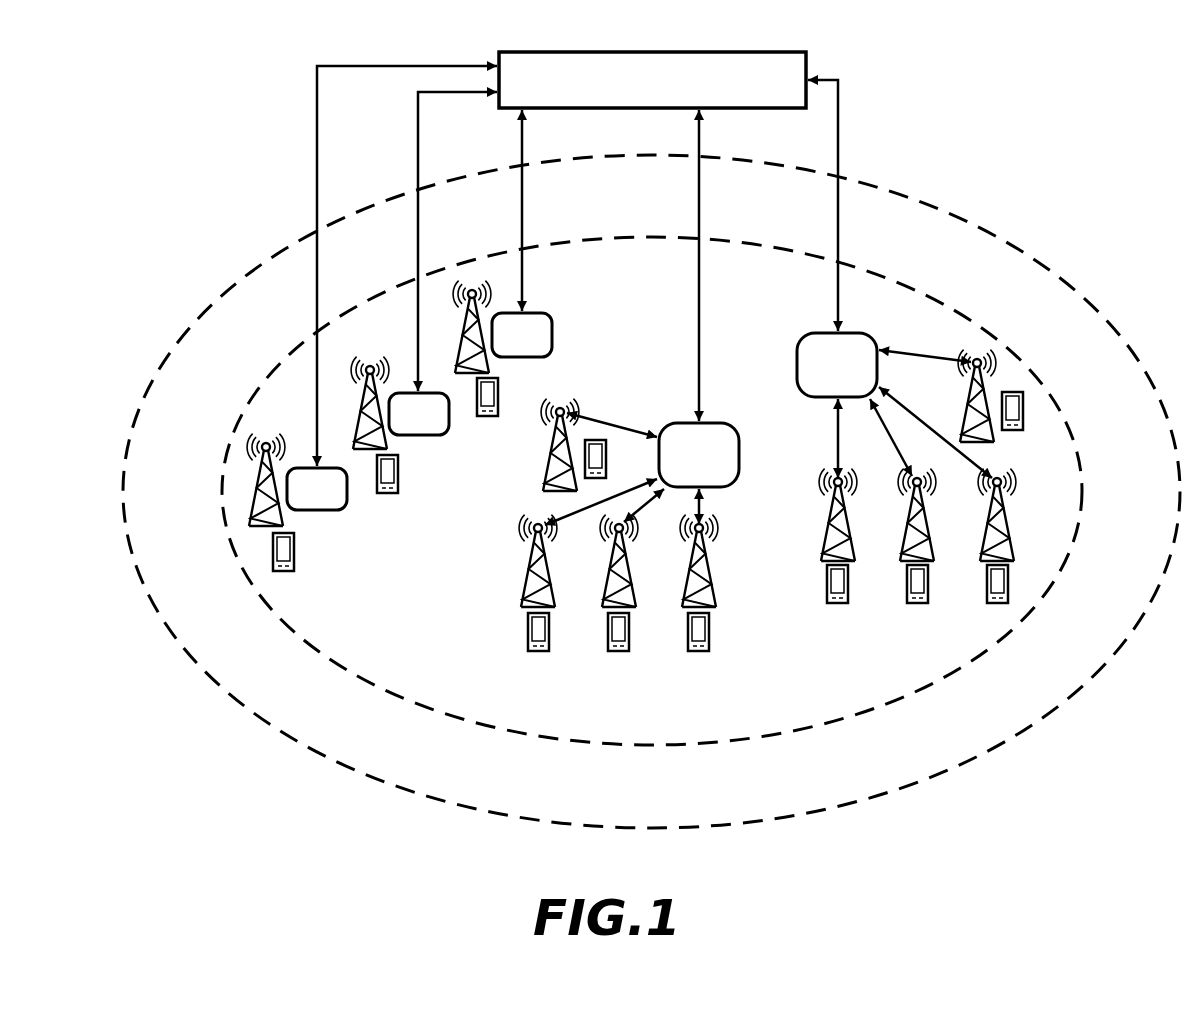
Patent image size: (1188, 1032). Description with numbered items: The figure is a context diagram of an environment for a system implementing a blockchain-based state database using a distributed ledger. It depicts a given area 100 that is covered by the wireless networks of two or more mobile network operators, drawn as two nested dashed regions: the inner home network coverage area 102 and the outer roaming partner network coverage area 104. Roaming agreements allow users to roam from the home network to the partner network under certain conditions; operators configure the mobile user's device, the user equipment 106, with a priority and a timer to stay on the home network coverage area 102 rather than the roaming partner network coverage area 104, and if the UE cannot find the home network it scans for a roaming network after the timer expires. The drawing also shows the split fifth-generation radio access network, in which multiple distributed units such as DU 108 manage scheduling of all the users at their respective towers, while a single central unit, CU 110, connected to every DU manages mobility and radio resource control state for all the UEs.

The area 100 is at (651, 422).
The home network coverage area 102 is at (806, 701).
The roaming partner network coverage area 104 is at (818, 788).
The user equipment 106 is at (294, 550).
The distributed unit 108 is at (345, 506).
The central unit 110 is at (755, 52).